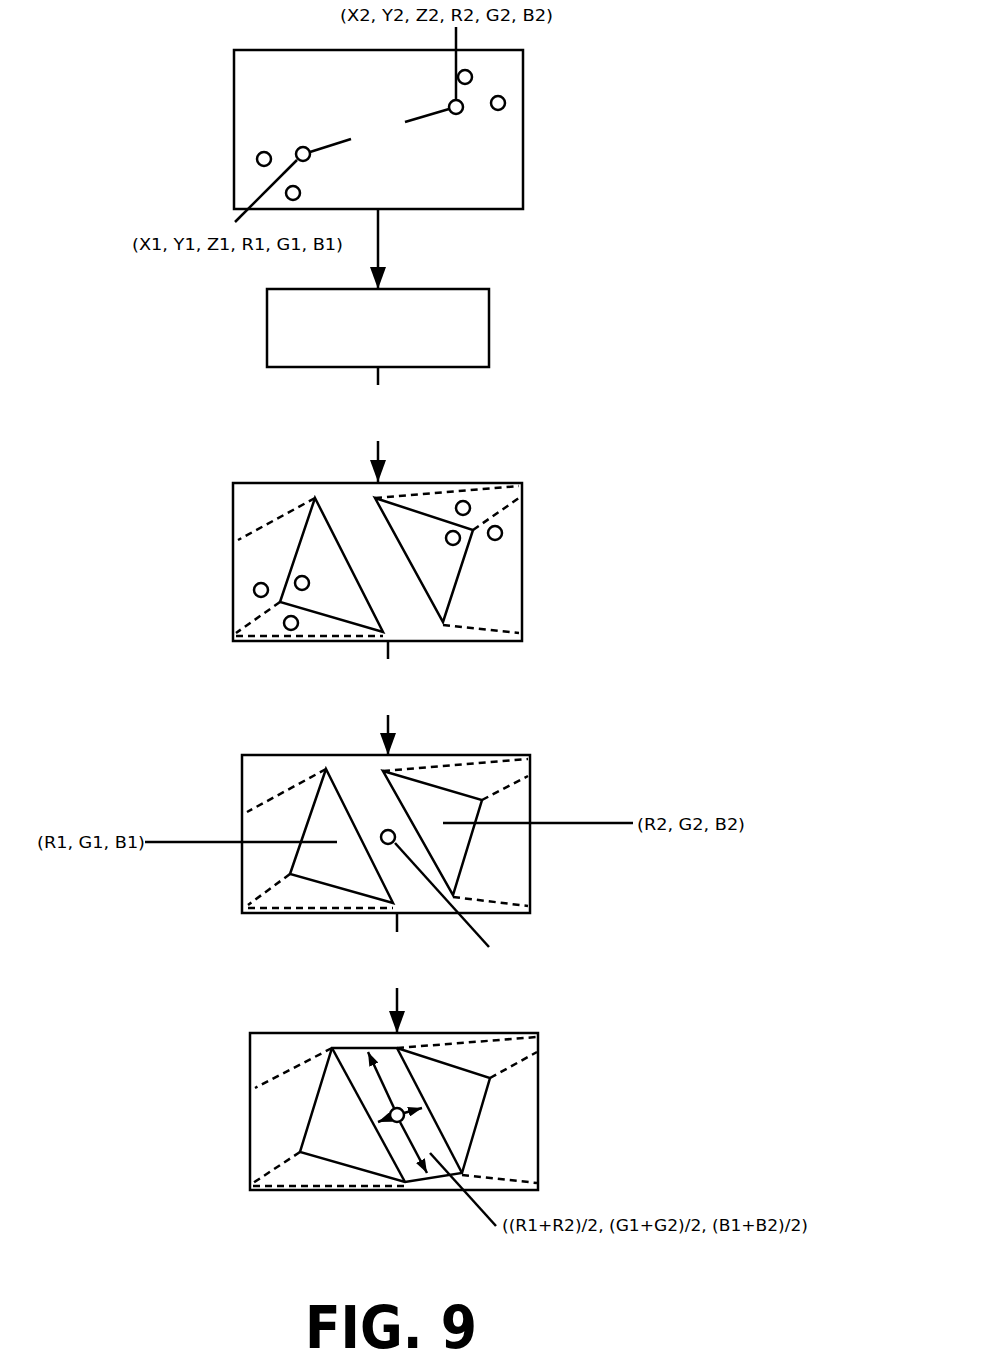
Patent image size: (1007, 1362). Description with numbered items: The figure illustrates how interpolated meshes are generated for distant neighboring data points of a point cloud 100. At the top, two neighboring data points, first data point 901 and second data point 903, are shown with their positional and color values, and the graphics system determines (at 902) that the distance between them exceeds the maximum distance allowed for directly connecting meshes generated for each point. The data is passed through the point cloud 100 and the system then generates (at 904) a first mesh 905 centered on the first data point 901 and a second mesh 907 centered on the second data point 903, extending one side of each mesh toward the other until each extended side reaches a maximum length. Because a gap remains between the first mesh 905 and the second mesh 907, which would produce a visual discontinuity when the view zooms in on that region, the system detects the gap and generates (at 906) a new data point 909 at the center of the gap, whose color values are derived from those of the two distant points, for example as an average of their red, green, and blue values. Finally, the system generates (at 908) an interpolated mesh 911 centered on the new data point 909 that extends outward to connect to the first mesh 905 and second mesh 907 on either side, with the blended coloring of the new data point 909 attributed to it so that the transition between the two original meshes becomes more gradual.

The point cloud 100 is at (364, 337).
The first data point 901 is at (303, 147).
The determining step 902 is at (364, 139).
The second data point 903 is at (456, 114).
The mesh generating step 904 is at (364, 422).
The first mesh 905 is at (343, 545).
The new data point generating step 906 is at (374, 696).
The second mesh 907 is at (423, 567).
The interpolated mesh generating step 908 is at (383, 969).
The new data point 909 is at (388, 830).
The interpolated mesh 911 is at (410, 1172).